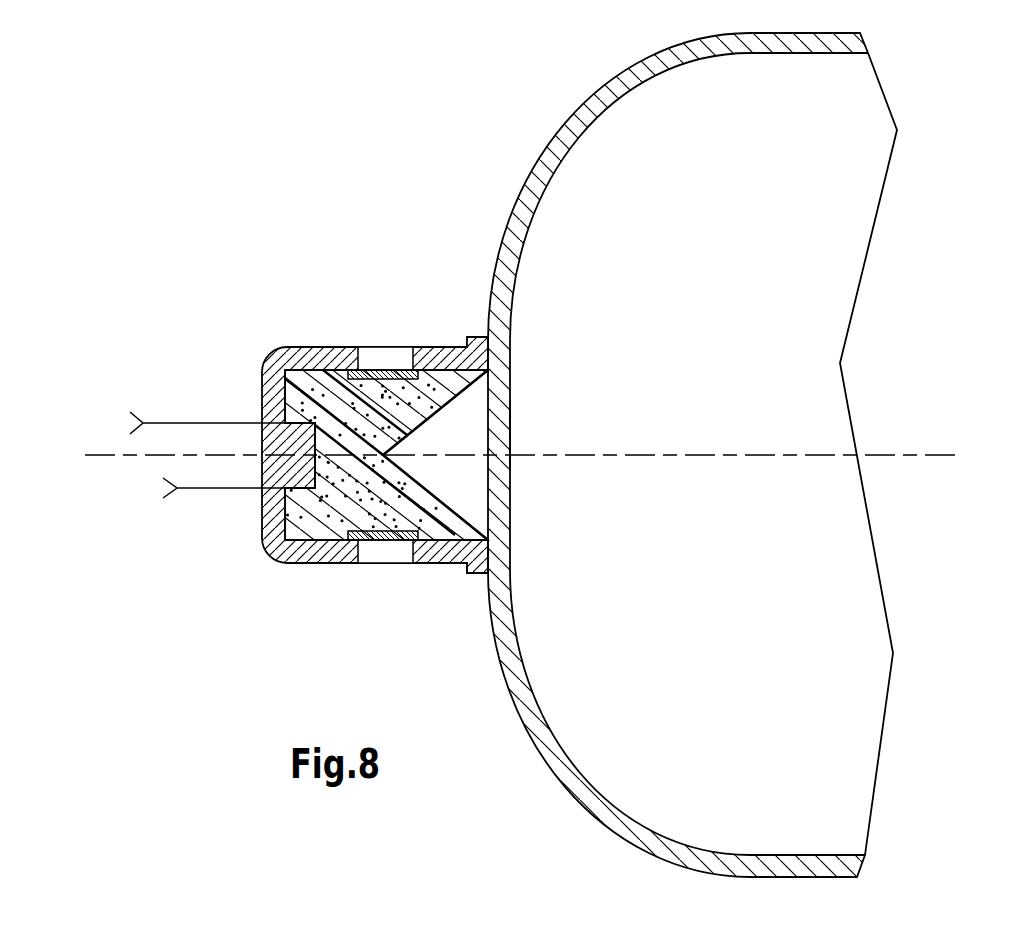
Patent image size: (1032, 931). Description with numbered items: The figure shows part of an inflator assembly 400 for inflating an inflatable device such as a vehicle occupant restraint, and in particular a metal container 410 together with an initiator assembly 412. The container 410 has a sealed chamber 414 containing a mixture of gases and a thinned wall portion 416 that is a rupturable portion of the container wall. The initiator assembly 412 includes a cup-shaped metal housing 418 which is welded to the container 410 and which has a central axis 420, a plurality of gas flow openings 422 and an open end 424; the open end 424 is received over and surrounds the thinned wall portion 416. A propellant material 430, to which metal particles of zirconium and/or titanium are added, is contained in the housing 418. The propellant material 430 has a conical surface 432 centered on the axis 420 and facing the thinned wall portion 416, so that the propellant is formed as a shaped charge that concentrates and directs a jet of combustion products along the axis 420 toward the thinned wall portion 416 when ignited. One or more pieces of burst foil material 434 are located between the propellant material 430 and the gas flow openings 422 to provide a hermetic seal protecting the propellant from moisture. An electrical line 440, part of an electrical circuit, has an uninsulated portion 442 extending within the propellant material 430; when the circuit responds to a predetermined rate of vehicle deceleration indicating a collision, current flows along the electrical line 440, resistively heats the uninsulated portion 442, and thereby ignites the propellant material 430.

The inflator assembly 400 is at (367, 377).
The metal container 410 is at (686, 454).
The initiator assembly 412 is at (388, 444).
The sealed chamber 414 is at (603, 173).
The thinned wall portion 416 is at (506, 428).
The cup-shaped metal housing 418 is at (305, 348).
The central axis 420 is at (785, 453).
The gas flow openings 422 is at (397, 357).
The open end 424 is at (490, 548).
The propellant material 430 is at (347, 510).
The conical surface 432 is at (440, 492).
The burst foil material 434 is at (374, 376).
The electrical line 440 is at (233, 490).
The uninsulated portion 442 is at (292, 505).